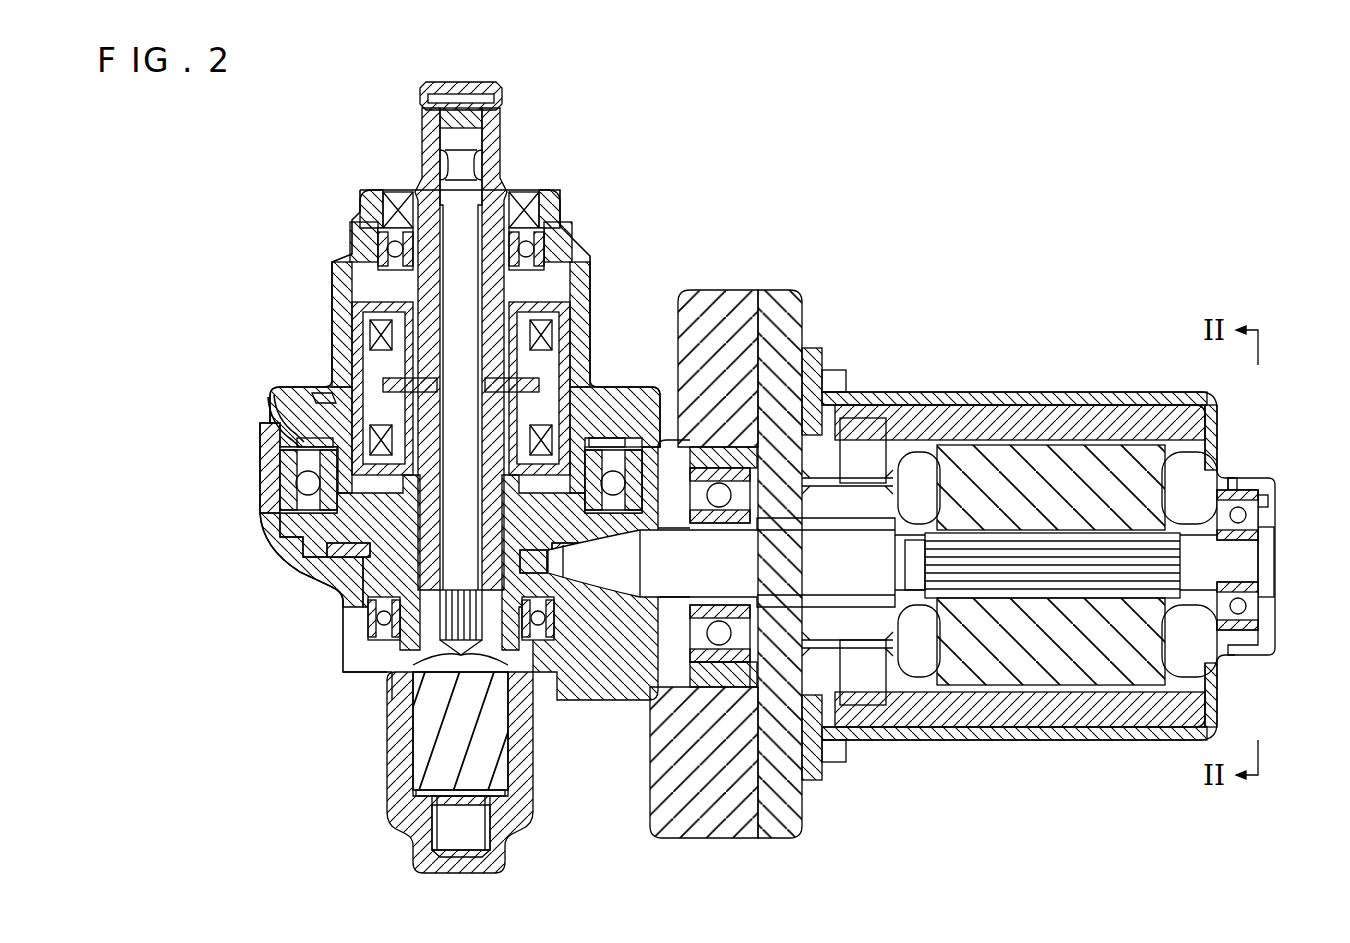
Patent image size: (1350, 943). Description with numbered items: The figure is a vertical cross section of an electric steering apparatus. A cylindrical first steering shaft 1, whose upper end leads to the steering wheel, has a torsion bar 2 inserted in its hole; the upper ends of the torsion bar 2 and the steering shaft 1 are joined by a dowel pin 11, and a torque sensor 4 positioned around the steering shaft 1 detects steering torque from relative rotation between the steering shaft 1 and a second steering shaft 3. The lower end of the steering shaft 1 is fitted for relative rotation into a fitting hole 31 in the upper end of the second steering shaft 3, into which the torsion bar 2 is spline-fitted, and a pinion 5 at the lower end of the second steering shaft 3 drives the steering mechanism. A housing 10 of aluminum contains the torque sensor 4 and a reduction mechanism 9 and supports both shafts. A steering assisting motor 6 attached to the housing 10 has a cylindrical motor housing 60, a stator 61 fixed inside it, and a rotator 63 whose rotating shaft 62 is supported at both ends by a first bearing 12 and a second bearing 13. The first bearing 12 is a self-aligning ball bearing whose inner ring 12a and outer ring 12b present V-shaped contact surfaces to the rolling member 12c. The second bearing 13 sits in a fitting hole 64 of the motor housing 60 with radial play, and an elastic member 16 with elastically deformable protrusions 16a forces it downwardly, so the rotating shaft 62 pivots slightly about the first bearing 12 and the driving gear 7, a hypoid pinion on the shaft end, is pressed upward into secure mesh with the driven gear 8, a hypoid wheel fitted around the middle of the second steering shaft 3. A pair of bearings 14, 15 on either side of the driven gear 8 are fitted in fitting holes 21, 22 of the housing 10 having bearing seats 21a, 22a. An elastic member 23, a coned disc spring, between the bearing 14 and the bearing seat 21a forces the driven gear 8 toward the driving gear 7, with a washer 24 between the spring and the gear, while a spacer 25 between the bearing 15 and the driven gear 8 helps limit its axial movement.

The first steering shaft 1 is at (420, 157).
The torsion bar 2 is at (440, 215).
The second steering shaft 3 is at (300, 583).
The torque sensor 4 is at (382, 388).
The pinion 5 is at (385, 765).
The steering assisting motor 6 is at (1061, 532).
The driving gear 7 is at (585, 588).
The driven gear 8 is at (560, 640).
The reduction mechanism 9 is at (298, 565).
The housing 10 is at (270, 550).
The dowel pin 11 is at (425, 99).
The first bearing 12 is at (715, 468).
The inner ring 12a is at (672, 662).
The outer ring 12b is at (722, 662).
The rolling member 12c is at (705, 665).
The second bearing 13 is at (1260, 540).
The bearing 14 is at (281, 480).
The bearing 15 is at (375, 640).
The elastic member 16 is at (1255, 480).
The protrusions 16a is at (1240, 475).
The fitting hole 21 is at (265, 518).
The bearing seat 21a is at (320, 400).
The fitting hole 22 is at (365, 640).
The bearing seat 22a is at (360, 690).
The elastic member 23 is at (268, 405).
The washer 24 is at (262, 445).
The spacer 25 is at (360, 600).
The fitting hole 31 is at (530, 390).
The motor housing 60 is at (960, 395).
The stator 61 is at (1040, 410).
The rotating shaft 62 is at (1072, 600).
The rotator 63 is at (1092, 455).
The fitting hole 64 is at (1265, 500).